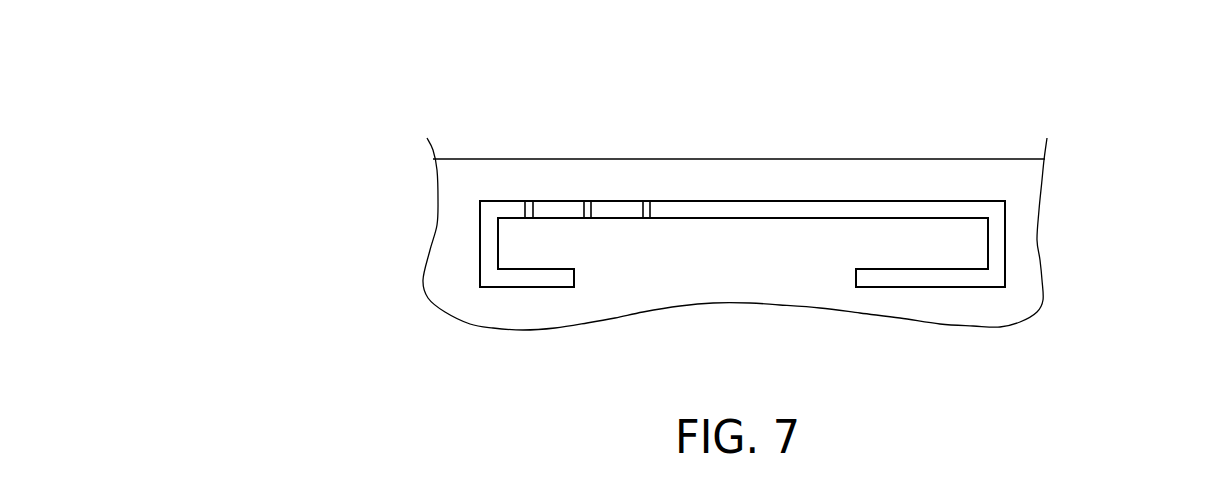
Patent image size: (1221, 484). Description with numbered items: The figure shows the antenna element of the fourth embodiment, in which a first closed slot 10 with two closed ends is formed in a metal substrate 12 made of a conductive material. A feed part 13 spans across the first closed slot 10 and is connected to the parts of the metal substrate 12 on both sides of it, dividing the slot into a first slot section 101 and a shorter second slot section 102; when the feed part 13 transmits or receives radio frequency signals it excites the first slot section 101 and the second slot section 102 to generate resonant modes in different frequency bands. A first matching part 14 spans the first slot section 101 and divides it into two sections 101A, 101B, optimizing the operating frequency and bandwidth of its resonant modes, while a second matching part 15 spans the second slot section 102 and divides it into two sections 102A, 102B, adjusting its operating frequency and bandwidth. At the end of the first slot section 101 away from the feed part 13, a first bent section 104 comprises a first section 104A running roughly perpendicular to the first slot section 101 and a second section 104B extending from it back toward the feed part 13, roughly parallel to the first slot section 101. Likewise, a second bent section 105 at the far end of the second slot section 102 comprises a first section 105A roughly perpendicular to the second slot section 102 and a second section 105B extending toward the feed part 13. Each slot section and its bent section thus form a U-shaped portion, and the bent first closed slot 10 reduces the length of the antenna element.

The first closed slot 10 is at (702, 80).
The first slot section 101 is at (748, 118).
The section of the first slot section 101A is at (630, 208).
The section of the first slot section 101B is at (712, 208).
The second slot section 102 is at (593, 118).
The section of the second slot section 102A is at (513, 208).
The section of the second slot section 102B is at (563, 208).
The metal substrate 12 is at (830, 182).
The feed part 13 is at (588, 217).
The first matching part 14 is at (650, 217).
The second matching part 15 is at (530, 217).
The first bent section 104 is at (1152, 223).
The first section of the first bent section 104A is at (995, 239).
The second section of the first bent section 104B is at (957, 278).
The second bent section 105 is at (330, 223).
The first section of the second bent section 105A is at (490, 239).
The second section of the second bent section 105B is at (517, 277).